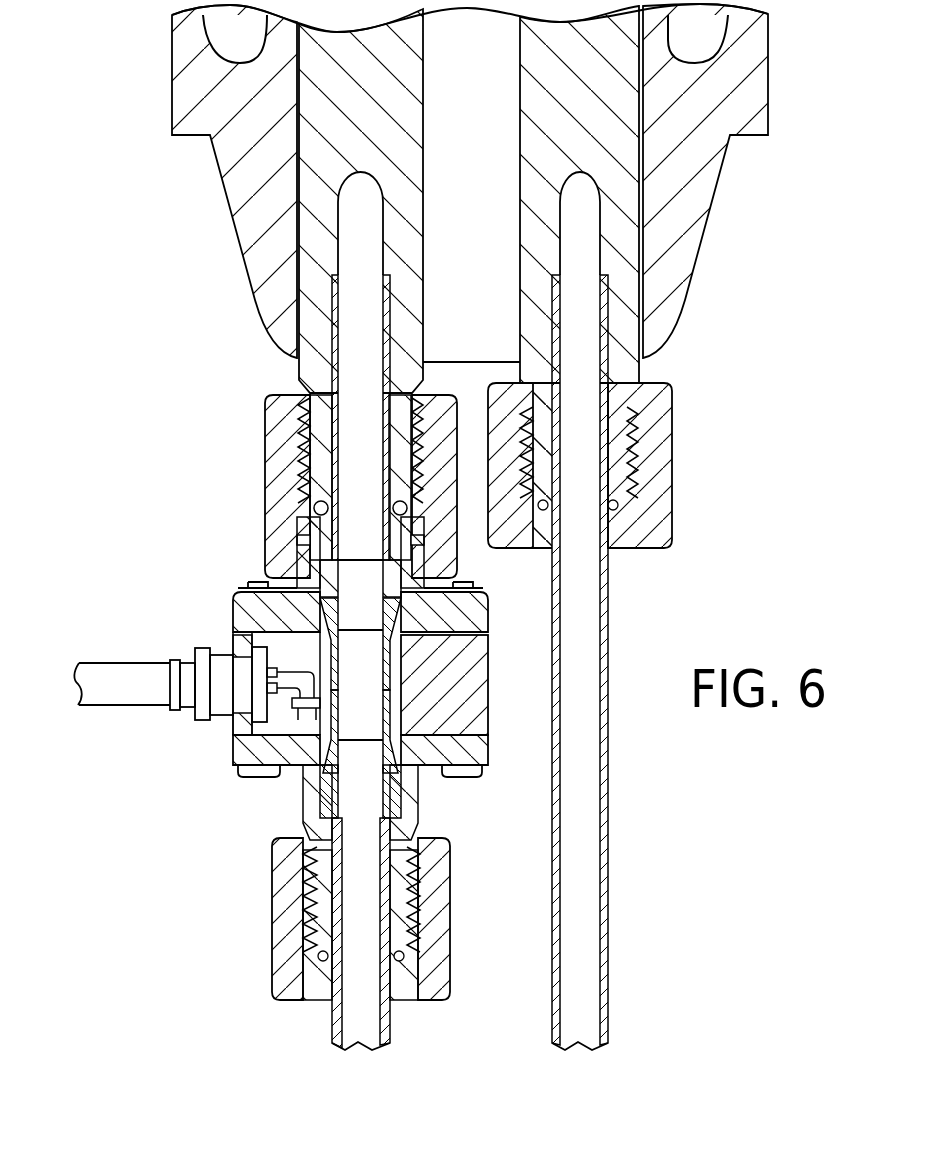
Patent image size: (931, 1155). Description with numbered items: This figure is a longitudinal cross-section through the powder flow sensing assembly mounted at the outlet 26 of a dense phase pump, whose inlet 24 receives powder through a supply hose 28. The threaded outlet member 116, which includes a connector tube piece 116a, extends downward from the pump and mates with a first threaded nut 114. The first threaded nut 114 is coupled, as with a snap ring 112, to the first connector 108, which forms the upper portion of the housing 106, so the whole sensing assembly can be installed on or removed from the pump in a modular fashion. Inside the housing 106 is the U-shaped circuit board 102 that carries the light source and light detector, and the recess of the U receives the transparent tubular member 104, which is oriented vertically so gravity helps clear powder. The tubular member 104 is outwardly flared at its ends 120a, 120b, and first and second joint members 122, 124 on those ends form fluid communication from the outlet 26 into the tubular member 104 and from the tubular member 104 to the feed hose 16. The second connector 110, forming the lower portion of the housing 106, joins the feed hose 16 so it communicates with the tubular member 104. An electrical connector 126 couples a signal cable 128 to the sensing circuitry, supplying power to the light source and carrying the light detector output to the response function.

The feed hose 16 is at (332, 1020).
The inlet 24 is at (582, 285).
The outlet 26 is at (361, 440).
The supply hose 28 is at (610, 760).
The circuit board 102 is at (252, 716).
The tubular member 104 is at (392, 693).
The housing 106 is at (490, 657).
The first connector 108 is at (236, 622).
The second connector 110 is at (480, 757).
The snap ring 112 is at (298, 538).
The first threaded nut 114 is at (265, 440).
The threaded outlet member 116 is at (303, 277).
The connector tube piece 116a is at (335, 328).
The flared end 120a is at (390, 615).
The flared end 120b is at (320, 768).
The first joint member 122 is at (318, 567).
The second joint member 124 is at (335, 757).
The electrical connector 126 is at (165, 726).
The signal cable 128 is at (120, 663).